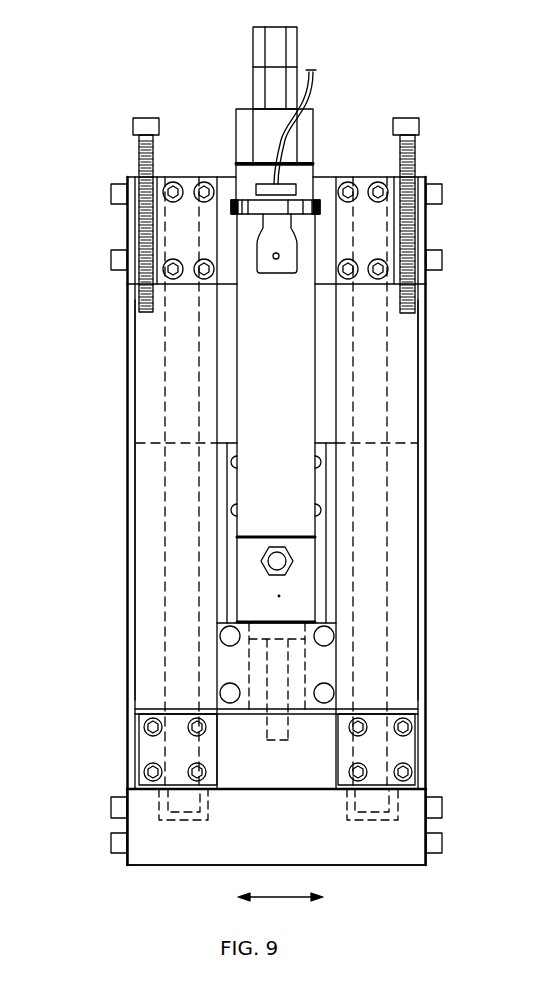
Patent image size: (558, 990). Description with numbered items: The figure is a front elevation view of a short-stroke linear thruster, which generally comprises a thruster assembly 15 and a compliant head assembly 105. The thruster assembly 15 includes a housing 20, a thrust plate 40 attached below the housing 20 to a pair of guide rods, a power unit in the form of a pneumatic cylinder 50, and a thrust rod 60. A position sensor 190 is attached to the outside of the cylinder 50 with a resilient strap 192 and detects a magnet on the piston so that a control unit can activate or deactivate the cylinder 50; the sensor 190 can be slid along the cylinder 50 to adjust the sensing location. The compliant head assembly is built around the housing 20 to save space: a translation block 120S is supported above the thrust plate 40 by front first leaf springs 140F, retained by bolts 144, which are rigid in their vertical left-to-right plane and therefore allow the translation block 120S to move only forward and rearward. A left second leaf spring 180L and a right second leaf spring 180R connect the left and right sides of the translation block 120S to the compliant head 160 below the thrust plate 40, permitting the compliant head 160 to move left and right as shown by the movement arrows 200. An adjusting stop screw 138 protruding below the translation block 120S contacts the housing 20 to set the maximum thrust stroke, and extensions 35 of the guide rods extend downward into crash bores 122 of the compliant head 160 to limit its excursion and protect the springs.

The clamping apparatus 105 is at (470, 165).
The thruster assembly 15 is at (491, 325).
The translation block 120S is at (104, 233).
The mounting tabs 122 is at (128, 850).
The bolts 144 is at (445, 807).
The adjusting stop screw 138 is at (147, 118).
The left second leaf spring 180L is at (128, 353).
The right second leaf spring 180R is at (427, 335).
The front first leaf springs 140F is at (153, 410).
The pneumatic cylinder 50 is at (287, 359).
The position sensor 190 is at (290, 192).
The clamp bar 192 is at (317, 200).
The housing 20 is at (238, 663).
The thrust rod 60 is at (282, 665).
The thrust plate 40 is at (318, 758).
The extensions of guide rods 35 is at (178, 800).
The compliant head 160 is at (225, 865).
The movement arrows 200 is at (290, 895).